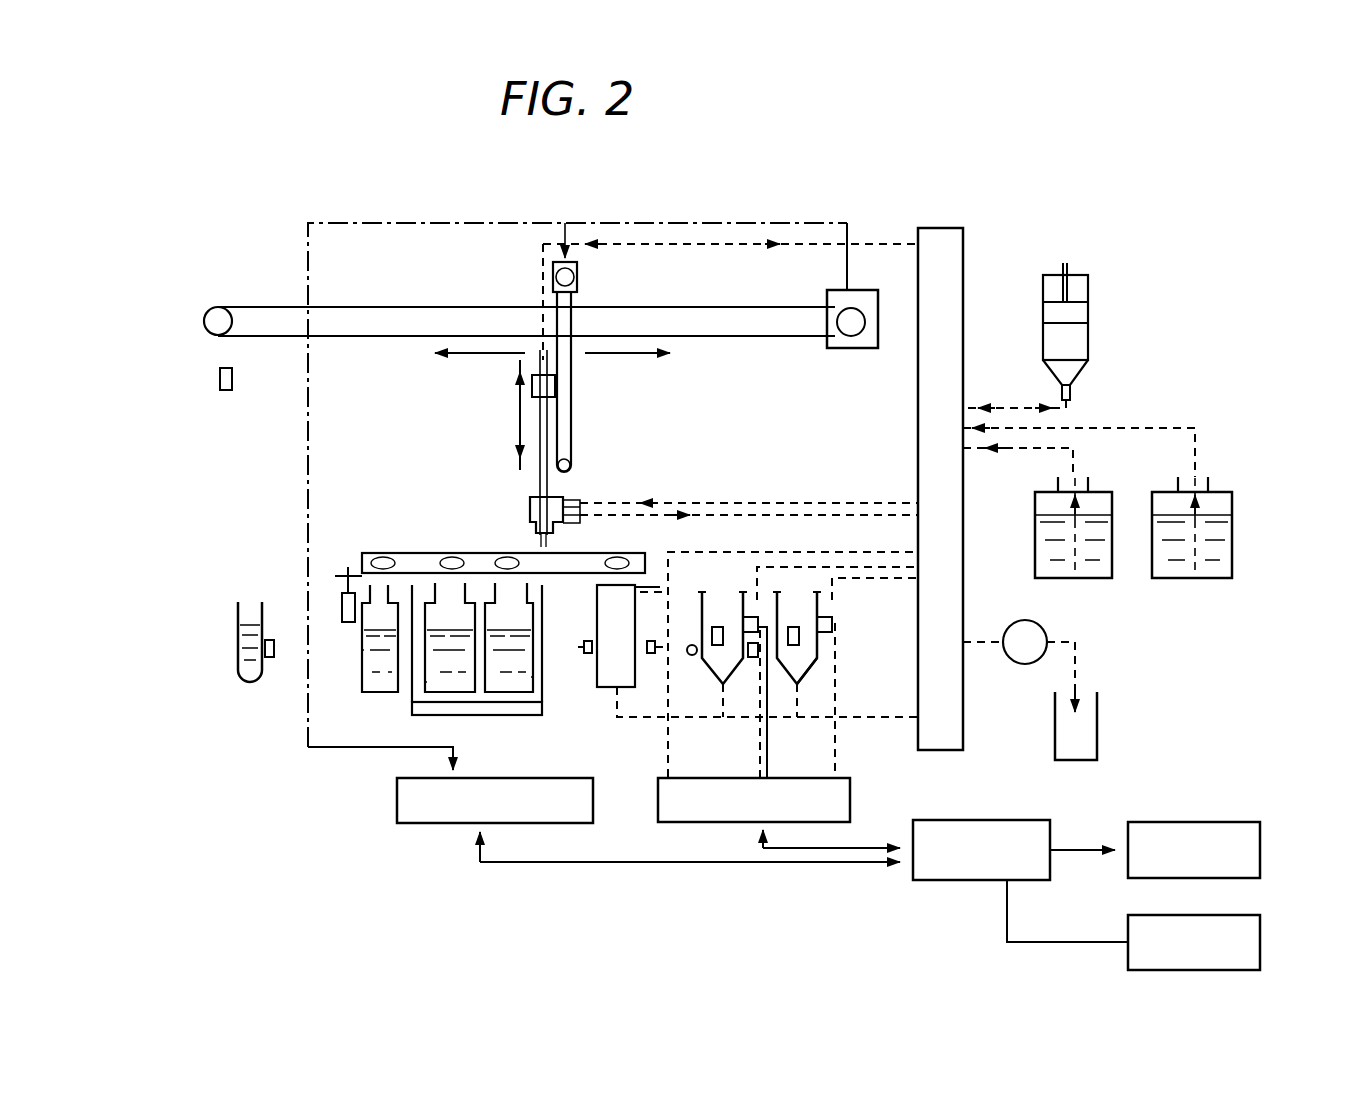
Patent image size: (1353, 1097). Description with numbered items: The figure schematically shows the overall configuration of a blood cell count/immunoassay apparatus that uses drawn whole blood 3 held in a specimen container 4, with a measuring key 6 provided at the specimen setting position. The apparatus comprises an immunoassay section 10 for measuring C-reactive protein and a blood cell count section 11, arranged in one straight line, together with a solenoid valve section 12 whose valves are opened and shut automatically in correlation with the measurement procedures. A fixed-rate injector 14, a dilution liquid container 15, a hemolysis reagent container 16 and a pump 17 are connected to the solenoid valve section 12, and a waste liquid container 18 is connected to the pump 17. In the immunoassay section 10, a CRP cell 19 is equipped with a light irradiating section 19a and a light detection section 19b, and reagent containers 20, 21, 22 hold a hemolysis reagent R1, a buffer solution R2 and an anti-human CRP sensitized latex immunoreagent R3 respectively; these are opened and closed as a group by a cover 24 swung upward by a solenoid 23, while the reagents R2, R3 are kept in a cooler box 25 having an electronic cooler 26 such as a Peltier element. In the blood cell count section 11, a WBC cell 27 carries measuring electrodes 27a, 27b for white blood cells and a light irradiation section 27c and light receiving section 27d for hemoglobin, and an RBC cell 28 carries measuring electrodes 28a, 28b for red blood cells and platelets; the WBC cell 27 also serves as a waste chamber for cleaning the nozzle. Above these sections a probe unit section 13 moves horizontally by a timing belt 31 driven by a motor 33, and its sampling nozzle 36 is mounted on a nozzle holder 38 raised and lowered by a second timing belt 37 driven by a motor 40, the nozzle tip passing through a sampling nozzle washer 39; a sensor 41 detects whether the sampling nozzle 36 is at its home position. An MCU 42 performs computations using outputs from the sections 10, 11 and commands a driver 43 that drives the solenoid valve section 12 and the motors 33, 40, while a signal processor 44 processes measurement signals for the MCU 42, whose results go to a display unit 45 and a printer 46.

The whole blood 3 is at (242, 645).
The specimen container 4 is at (238, 615).
The measuring key 6 is at (270, 658).
The immunoassay section 10 is at (480, 643).
The blood cell count section 11 is at (788, 693).
The solenoid valve section 12 is at (965, 265).
The probe unit section 13 is at (482, 382).
The fixed-rate injector 14 is at (1088, 310).
The dilution liquid container 15 is at (1112, 565).
The hemolysis reagent container 16 is at (1232, 560).
The pump 17 is at (1025, 620).
The waste liquid container 18 is at (1097, 712).
The CRP cell 19 is at (602, 690).
The light irradiating section 19a is at (588, 640).
The light detection section 19b is at (652, 640).
The reagent container 20 is at (362, 712).
The reagent container 21 is at (508, 697).
The reagent container 22 is at (452, 697).
The solenoid 23 is at (342, 605).
The cover 24 is at (388, 553).
The cooler box 25 is at (408, 597).
The electronic cooler 26 is at (432, 706).
The WBC cell 27 is at (702, 596).
The measuring electrode 27a is at (738, 632).
The measuring electrode 27b is at (718, 627).
The light irradiation section 27c is at (690, 655).
The light receiving section 27d is at (755, 657).
The RBC cell 28 is at (820, 608).
The measuring electrode 28a is at (826, 618).
The measuring electrode 28b is at (807, 668).
The timing belt 31 is at (739, 338).
The motor 33 is at (852, 350).
The sampling nozzle 36 is at (548, 490).
The second timing belt 37 is at (573, 420).
The nozzle holder 38 is at (535, 375).
The sampling nozzle washer 39 is at (530, 500).
The motor 40 is at (578, 277).
The sensor 41 is at (226, 392).
The MCU 42 is at (945, 882).
The driver 43 is at (412, 826).
The signal processor 44 is at (851, 800).
The display unit 45 is at (1196, 822).
The printer 46 is at (1260, 925).
The hemolysis reagent R1 is at (375, 658).
The buffer solution R2 is at (512, 677).
The anti-human CRP sensitized latex immunoreagent R3 is at (437, 682).